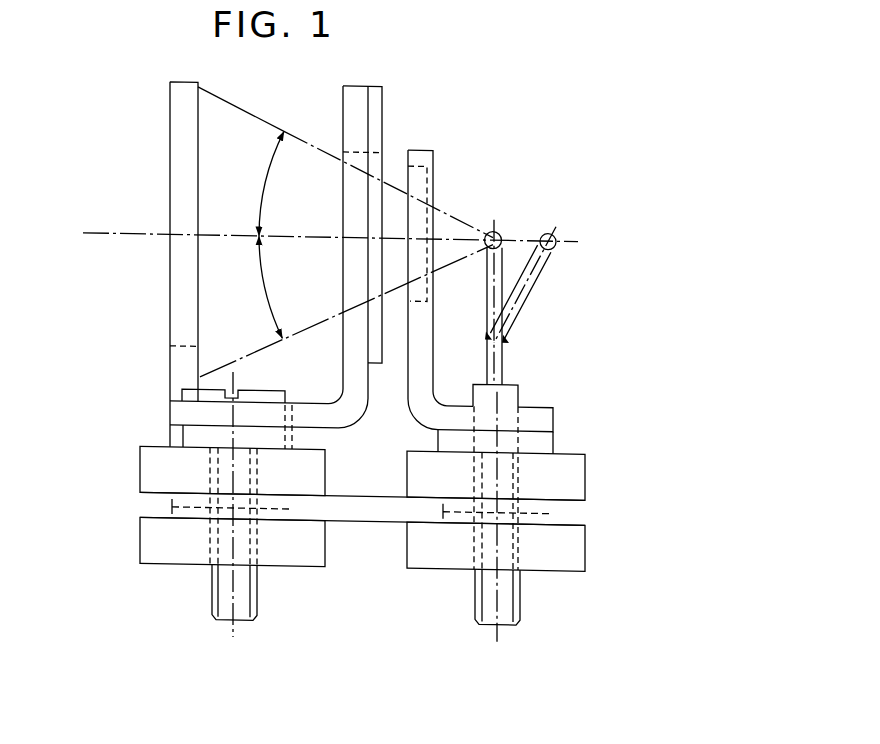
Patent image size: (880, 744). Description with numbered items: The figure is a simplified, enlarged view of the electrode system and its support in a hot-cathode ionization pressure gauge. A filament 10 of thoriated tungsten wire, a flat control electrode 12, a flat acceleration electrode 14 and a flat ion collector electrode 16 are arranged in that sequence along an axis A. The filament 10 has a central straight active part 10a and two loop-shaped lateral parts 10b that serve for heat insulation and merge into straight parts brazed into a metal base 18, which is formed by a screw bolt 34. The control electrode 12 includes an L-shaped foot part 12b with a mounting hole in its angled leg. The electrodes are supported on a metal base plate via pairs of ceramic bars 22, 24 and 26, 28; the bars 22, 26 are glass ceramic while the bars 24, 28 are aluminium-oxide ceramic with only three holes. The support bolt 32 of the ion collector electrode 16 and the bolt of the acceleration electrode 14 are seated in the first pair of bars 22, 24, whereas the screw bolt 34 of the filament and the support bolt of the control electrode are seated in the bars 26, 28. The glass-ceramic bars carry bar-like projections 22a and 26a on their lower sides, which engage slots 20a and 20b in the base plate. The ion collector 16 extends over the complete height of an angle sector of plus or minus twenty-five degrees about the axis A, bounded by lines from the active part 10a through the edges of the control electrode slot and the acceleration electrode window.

The filament 10 is at (598, 259).
The active part 10a is at (497, 231).
The loop-shaped lateral parts 10b is at (550, 239).
The control electrode 12 is at (443, 197).
The L-shaped foot part 12b is at (542, 420).
The acceleration electrode 14 is at (377, 117).
The ion collector electrode 16 is at (180, 140).
The metal base 18 is at (505, 391).
The slot 20a is at (200, 519).
The slot 20b is at (543, 519).
The ceramic bar 22 is at (167, 479).
The bar-like projection 22a is at (180, 507).
The ceramic bar 24 is at (183, 556).
The ceramic bar 26 is at (553, 482).
The bar-like projection 26a is at (545, 507).
The ceramic bar 28 is at (553, 559).
The support bolt 32 is at (210, 576).
The screw bolt 34 is at (503, 601).
The axis A is at (123, 236).